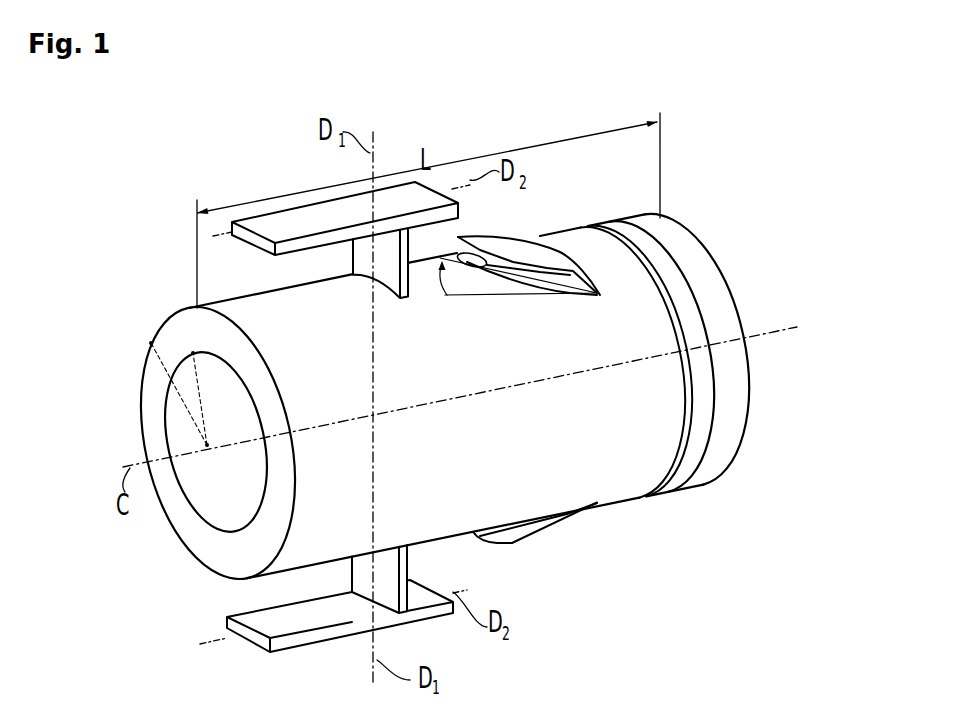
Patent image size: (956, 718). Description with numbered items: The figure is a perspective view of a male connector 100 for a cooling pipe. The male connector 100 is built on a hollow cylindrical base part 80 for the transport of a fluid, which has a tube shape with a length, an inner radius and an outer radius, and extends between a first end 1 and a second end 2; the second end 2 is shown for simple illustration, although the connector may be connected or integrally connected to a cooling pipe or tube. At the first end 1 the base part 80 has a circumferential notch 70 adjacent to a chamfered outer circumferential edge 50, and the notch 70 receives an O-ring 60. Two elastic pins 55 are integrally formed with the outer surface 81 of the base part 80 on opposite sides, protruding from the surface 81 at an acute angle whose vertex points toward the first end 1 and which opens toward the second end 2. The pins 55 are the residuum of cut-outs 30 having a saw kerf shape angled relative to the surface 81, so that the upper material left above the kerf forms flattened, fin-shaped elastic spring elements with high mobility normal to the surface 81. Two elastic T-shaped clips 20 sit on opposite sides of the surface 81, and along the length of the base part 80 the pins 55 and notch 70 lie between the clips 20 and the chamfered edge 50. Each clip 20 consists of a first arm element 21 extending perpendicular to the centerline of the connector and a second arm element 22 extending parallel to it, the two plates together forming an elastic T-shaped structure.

The first end 1 is at (710, 247).
The second end 2 is at (167, 333).
The elastic T-shaped clip 20 is at (340, 253).
The first arm element 21 is at (408, 237).
The second arm element 22 is at (293, 207).
The cut-out 30 is at (458, 258).
The chamfered outer circumferential edge 50 is at (737, 283).
The elastic pin 55 is at (511, 240).
The O-ring 60 is at (620, 209).
The circumferential notch 70 is at (687, 362).
The hollow cylindrical base part 80 is at (526, 436).
The surface 81 is at (236, 300).
The male connector 100 is at (585, 203).